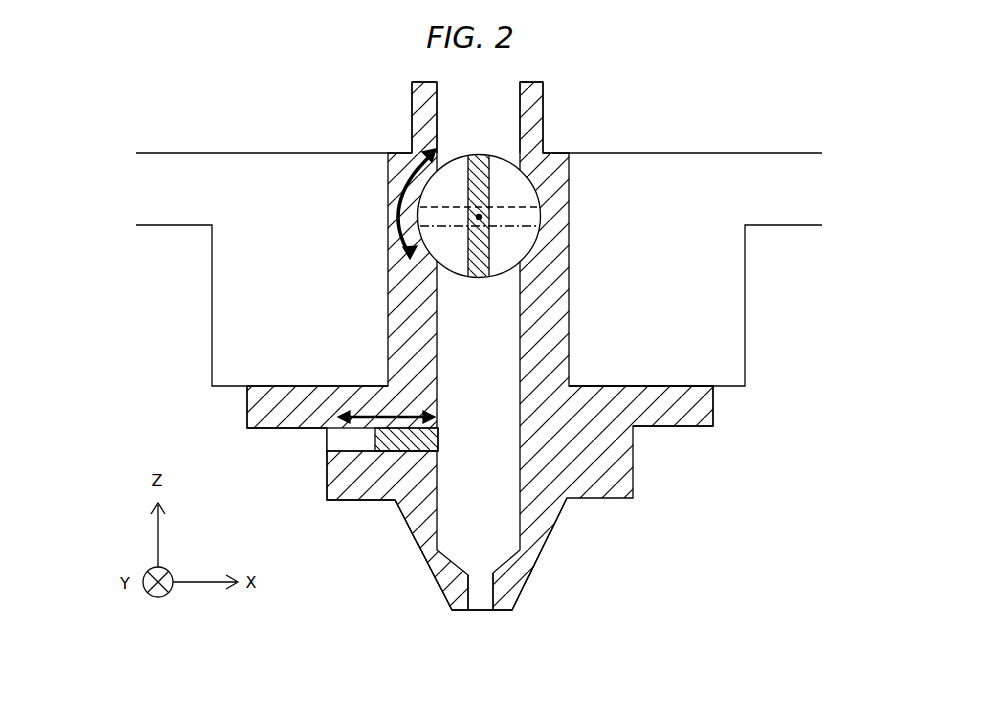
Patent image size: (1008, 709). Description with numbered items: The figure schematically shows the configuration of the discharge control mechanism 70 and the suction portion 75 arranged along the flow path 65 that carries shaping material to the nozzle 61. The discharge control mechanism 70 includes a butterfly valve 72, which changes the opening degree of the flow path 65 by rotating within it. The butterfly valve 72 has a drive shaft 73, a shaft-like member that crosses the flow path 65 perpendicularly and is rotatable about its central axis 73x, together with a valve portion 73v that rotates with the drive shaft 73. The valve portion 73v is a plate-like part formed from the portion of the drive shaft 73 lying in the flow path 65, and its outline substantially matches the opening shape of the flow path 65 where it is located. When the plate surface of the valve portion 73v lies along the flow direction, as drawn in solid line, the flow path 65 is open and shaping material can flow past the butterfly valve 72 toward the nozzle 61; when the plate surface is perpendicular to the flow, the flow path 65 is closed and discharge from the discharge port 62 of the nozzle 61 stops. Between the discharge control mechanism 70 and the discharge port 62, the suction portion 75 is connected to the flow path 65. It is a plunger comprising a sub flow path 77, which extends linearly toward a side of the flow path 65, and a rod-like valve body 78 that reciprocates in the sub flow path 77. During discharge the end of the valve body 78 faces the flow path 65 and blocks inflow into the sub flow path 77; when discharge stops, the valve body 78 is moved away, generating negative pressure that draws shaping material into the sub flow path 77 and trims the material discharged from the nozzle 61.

The nozzle 61 is at (528, 568).
The discharge port 62 is at (478, 612).
The flow path 65 is at (520, 348).
The discharge control mechanism 70 is at (496, 147).
The butterfly valve 72 is at (452, 153).
The drive shaft 73 is at (508, 178).
The valve portion 73v is at (492, 190).
The central axis 73x is at (479, 217).
The suction portion 75 is at (333, 422).
The sub flow path 77 is at (343, 437).
The valve body 78 is at (393, 463).